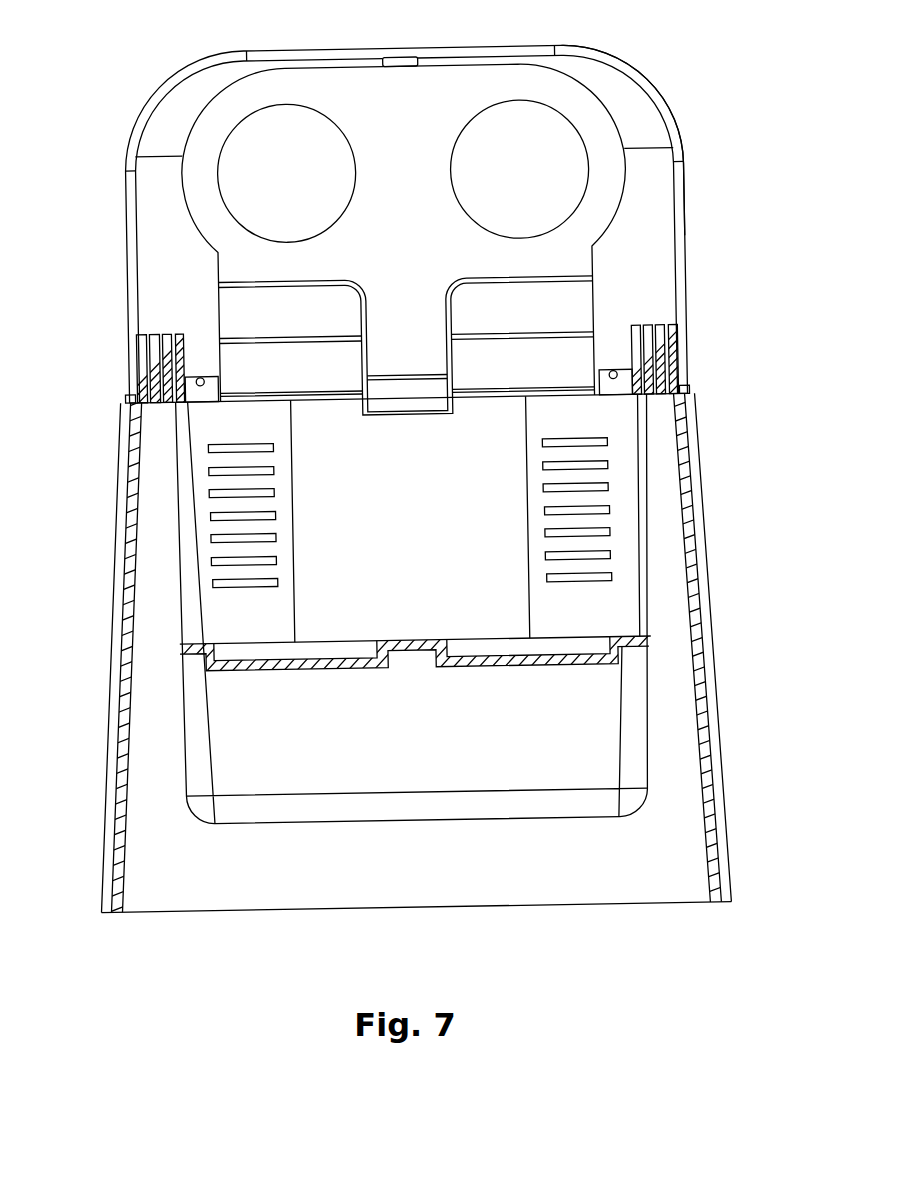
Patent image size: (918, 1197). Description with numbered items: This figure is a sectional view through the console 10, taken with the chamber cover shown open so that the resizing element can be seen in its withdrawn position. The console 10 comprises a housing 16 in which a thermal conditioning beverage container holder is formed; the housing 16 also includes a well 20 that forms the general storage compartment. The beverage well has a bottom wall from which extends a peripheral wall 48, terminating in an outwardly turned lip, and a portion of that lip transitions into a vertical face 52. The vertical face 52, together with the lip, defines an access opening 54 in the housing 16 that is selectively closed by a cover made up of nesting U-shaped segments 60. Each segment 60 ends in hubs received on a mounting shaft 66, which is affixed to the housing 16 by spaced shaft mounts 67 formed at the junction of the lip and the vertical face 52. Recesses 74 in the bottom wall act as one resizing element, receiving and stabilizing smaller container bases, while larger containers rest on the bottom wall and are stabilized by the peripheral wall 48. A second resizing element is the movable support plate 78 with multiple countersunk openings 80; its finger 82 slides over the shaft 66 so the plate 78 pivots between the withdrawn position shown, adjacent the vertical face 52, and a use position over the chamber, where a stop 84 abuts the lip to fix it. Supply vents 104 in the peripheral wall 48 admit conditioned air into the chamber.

The console 10 is at (63, 98).
The housing 16 is at (729, 821).
The well 20 is at (643, 787).
The peripheral wall 48 is at (649, 557).
The vertical face 52 is at (660, 232).
The access opening 54 is at (666, 183).
The U-shaped segments 60 is at (182, 330).
The mounting shaft 66 is at (127, 390).
The shaft mounts 67 is at (285, 365).
The recess 74 is at (230, 664).
The movable support plate 78 is at (625, 121).
The openings 80 is at (284, 181).
The finger 82 is at (405, 332).
The stop 84 is at (408, 60).
The supply vents 104 is at (209, 467).